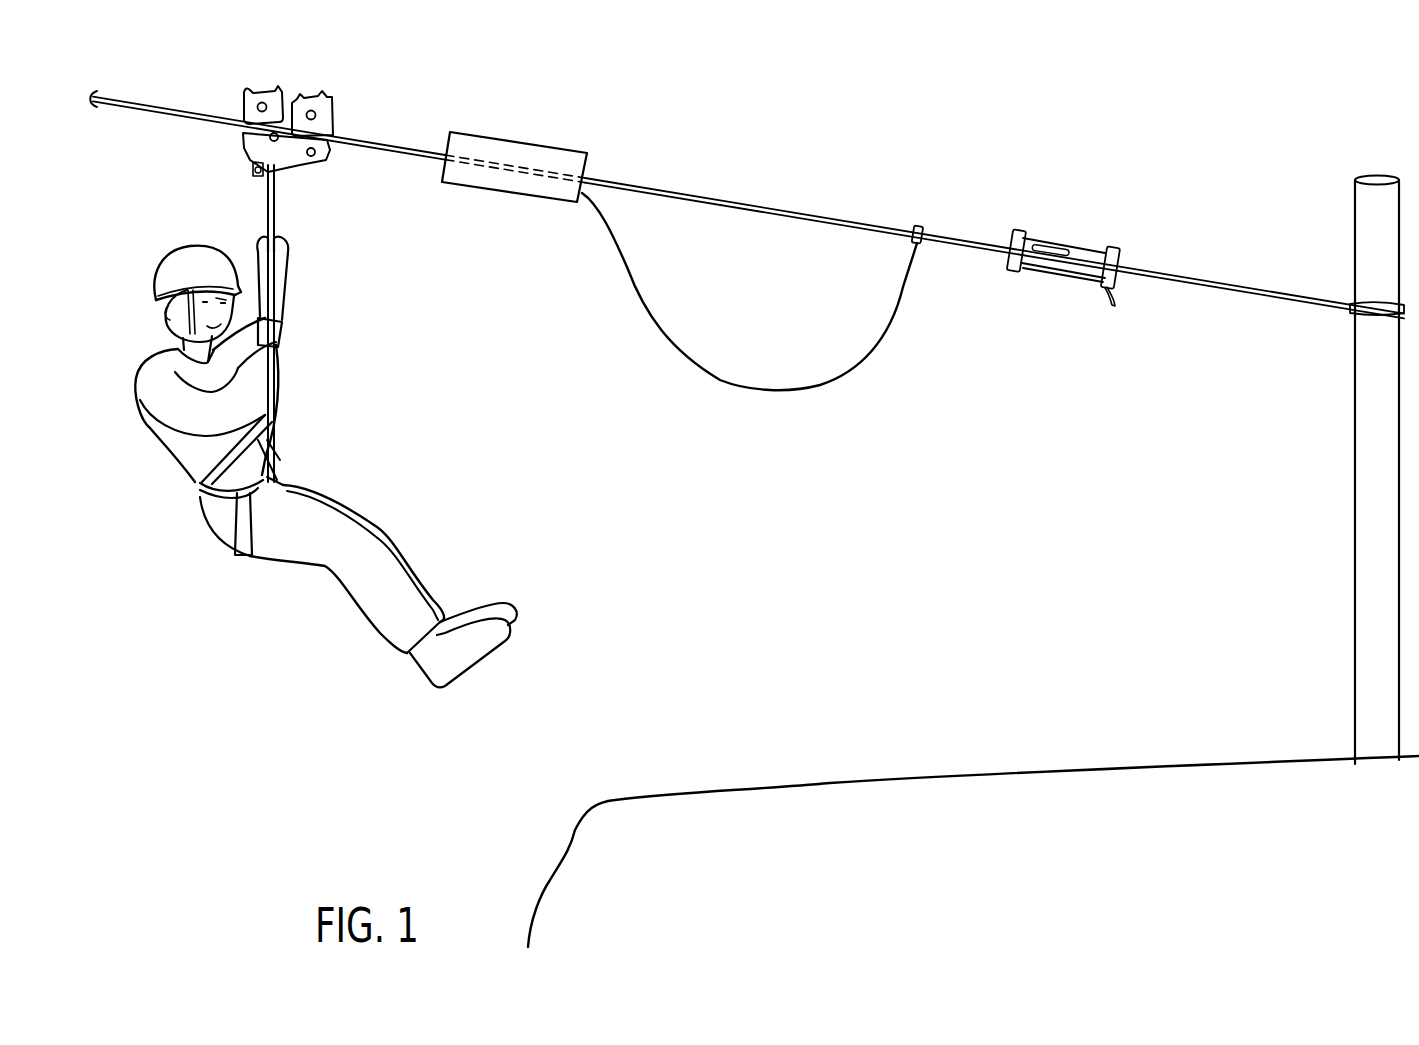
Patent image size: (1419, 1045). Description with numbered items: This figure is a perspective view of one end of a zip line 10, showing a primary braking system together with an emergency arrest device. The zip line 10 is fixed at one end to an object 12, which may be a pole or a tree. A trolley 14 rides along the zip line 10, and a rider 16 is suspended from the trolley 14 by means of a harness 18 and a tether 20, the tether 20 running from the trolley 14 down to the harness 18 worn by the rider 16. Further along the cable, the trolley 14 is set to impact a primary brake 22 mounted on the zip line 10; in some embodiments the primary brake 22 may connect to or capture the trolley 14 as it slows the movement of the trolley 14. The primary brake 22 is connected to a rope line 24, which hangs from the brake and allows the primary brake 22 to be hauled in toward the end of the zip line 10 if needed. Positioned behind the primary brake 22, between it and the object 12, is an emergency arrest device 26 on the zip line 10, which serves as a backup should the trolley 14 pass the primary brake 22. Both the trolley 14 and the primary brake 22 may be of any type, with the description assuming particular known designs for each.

The zip line 10 is at (797, 208).
The object 12 is at (1368, 226).
The trolley 14 is at (263, 97).
The rider 16 is at (178, 250).
The harness 18 is at (200, 499).
The tether 20 is at (278, 205).
The primary brake 22 is at (532, 148).
The rope line 24 is at (707, 375).
The emergency arrest device 26 is at (1070, 240).